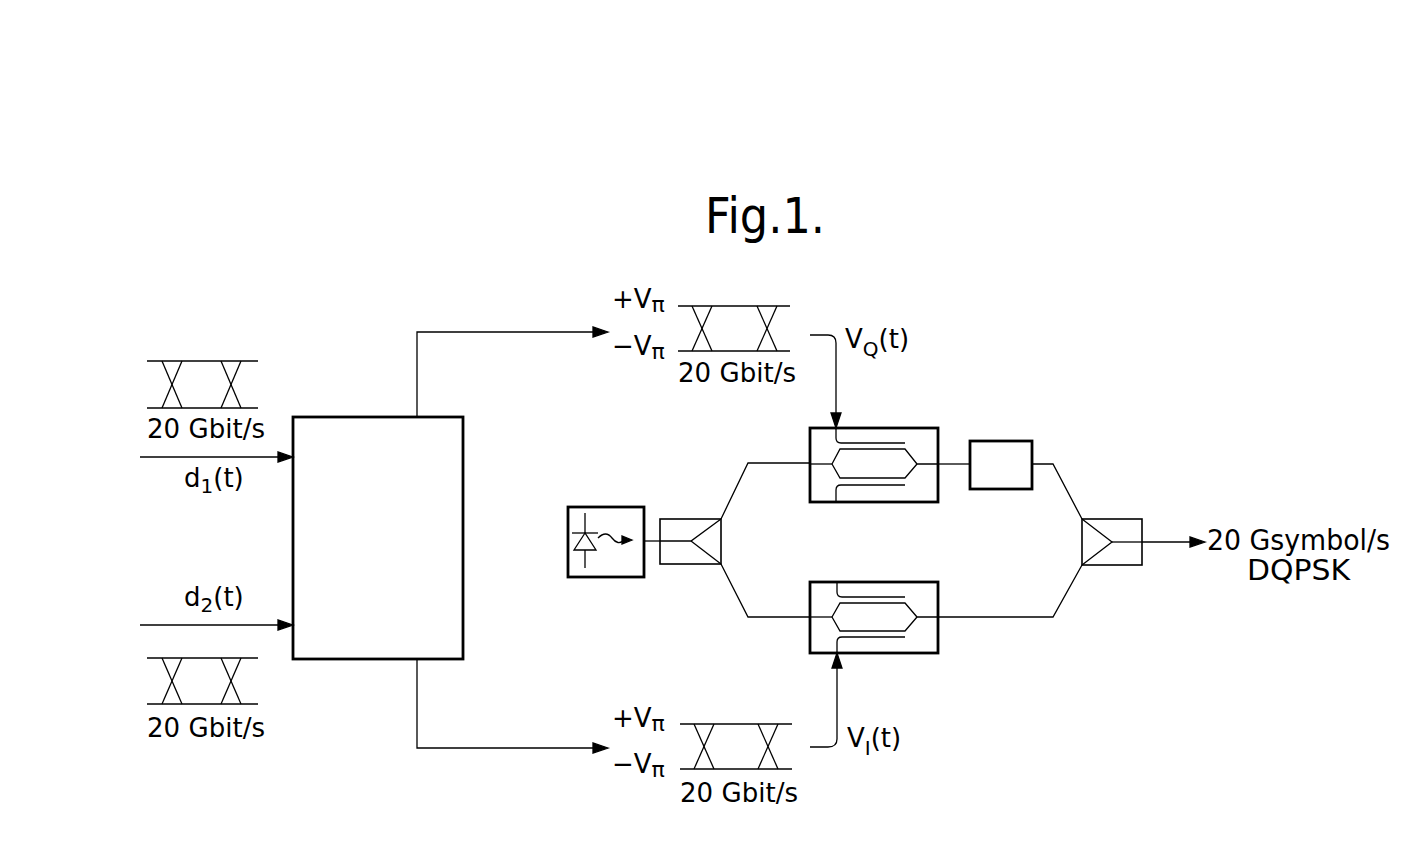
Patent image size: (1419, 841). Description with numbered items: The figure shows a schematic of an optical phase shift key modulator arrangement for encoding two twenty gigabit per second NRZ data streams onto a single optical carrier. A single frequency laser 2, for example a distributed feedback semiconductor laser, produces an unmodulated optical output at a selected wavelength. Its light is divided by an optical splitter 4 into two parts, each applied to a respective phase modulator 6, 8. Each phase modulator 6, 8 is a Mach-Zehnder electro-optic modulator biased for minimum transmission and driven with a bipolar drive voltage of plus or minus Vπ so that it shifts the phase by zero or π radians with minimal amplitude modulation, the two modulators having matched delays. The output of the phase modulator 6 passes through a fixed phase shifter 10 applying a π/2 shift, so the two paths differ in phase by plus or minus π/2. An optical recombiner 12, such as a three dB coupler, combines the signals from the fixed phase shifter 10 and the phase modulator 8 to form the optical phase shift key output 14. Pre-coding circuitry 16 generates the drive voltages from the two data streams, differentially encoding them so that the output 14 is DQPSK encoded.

The single frequency laser 2 is at (592, 507).
The optical splitter 4 is at (685, 564).
The phase modulator 6 is at (903, 428).
The phase modulator 8 is at (925, 653).
The fixed phase shifter 10 is at (1013, 441).
The optical recombiner 12 is at (1125, 565).
The optical phase shift key output 14 is at (1175, 541).
The pre-coding circuitry 16 is at (395, 550).